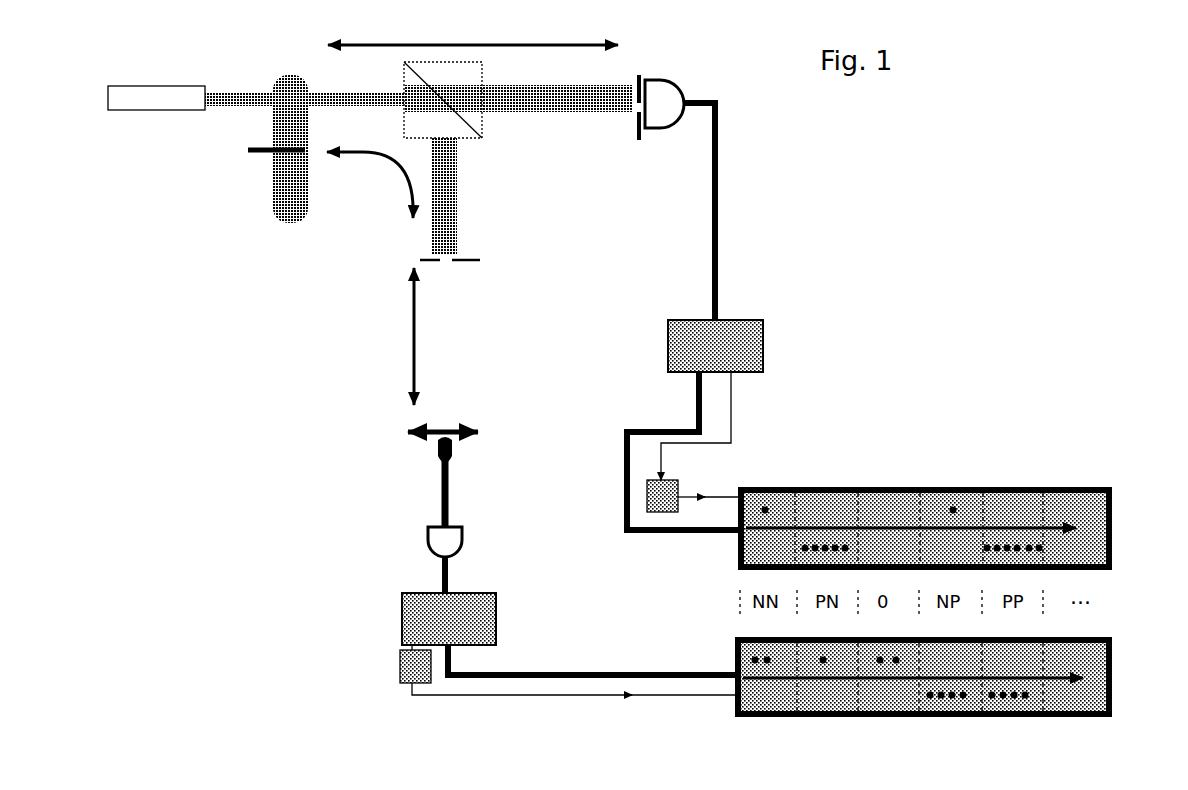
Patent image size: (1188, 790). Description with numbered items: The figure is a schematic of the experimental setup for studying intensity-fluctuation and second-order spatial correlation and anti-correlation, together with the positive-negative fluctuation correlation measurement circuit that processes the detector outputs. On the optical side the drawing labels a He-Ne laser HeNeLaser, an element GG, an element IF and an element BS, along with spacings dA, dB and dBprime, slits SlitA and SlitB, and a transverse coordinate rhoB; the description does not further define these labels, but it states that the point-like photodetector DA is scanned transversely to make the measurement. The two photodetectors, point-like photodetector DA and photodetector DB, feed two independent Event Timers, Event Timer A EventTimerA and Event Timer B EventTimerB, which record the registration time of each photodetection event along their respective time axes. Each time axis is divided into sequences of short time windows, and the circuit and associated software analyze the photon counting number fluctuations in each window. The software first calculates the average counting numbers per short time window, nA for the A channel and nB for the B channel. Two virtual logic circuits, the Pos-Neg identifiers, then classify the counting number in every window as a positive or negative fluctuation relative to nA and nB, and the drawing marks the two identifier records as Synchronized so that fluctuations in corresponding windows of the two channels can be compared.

The He-Ne laser source HeNeLaser is at (156, 98).
The ground glass GG is at (278, 162).
The interference filter IF is at (338, 71).
The beam splitter BS is at (456, 104).
The distance d_A dA is at (473, 33).
The distance d_B dB is at (370, 185).
The slit B SlitB is at (459, 275).
The distance d'_B dBprime is at (397, 336).
The transverse coordinate rho_B rhoB is at (465, 436).
The photodetector DB is at (460, 546).
The Event Timer EventTimerB is at (449, 619).
The average counting number per short time window nA is at (415, 664).
The slit A SlitA is at (627, 119).
The point-like photodetector DA is at (679, 89).
The Event Timer EventTimerA is at (715, 346).
The average counting number per short time window nB is at (662, 496).
The synchronized indication Synchronized is at (726, 553).